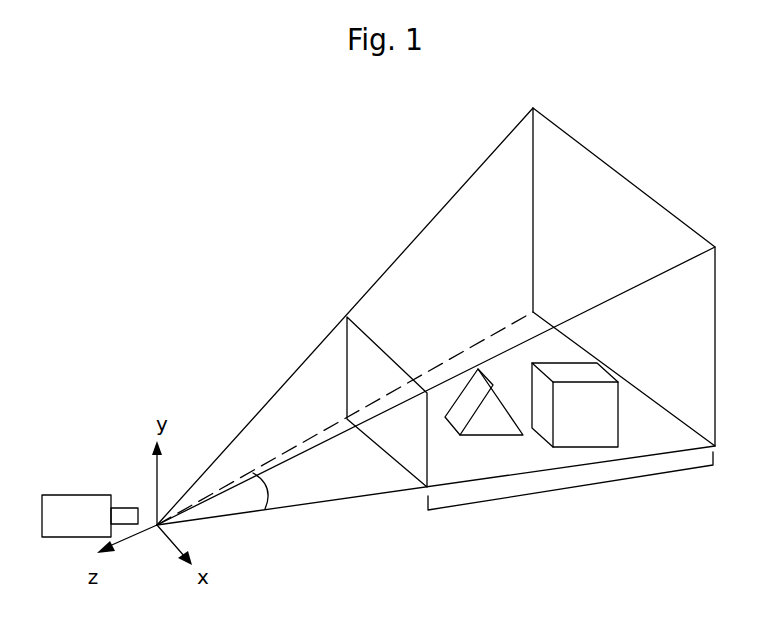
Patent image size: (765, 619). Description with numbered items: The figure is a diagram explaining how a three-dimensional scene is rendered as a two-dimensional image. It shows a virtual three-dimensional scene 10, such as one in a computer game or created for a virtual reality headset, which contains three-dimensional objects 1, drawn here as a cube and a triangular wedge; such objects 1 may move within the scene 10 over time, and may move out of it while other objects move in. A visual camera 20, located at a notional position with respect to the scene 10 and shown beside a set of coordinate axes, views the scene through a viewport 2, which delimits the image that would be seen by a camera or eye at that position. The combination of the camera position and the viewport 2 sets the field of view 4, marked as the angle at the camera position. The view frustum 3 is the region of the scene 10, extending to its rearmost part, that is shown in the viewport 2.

The 3D objects 1 is at (577, 372).
The viewport 2 is at (367, 382).
The view frustum 3 is at (575, 490).
The field of view 4 is at (263, 492).
The virtual 3D scene 10 is at (250, 235).
The visual camera 20 is at (51, 495).